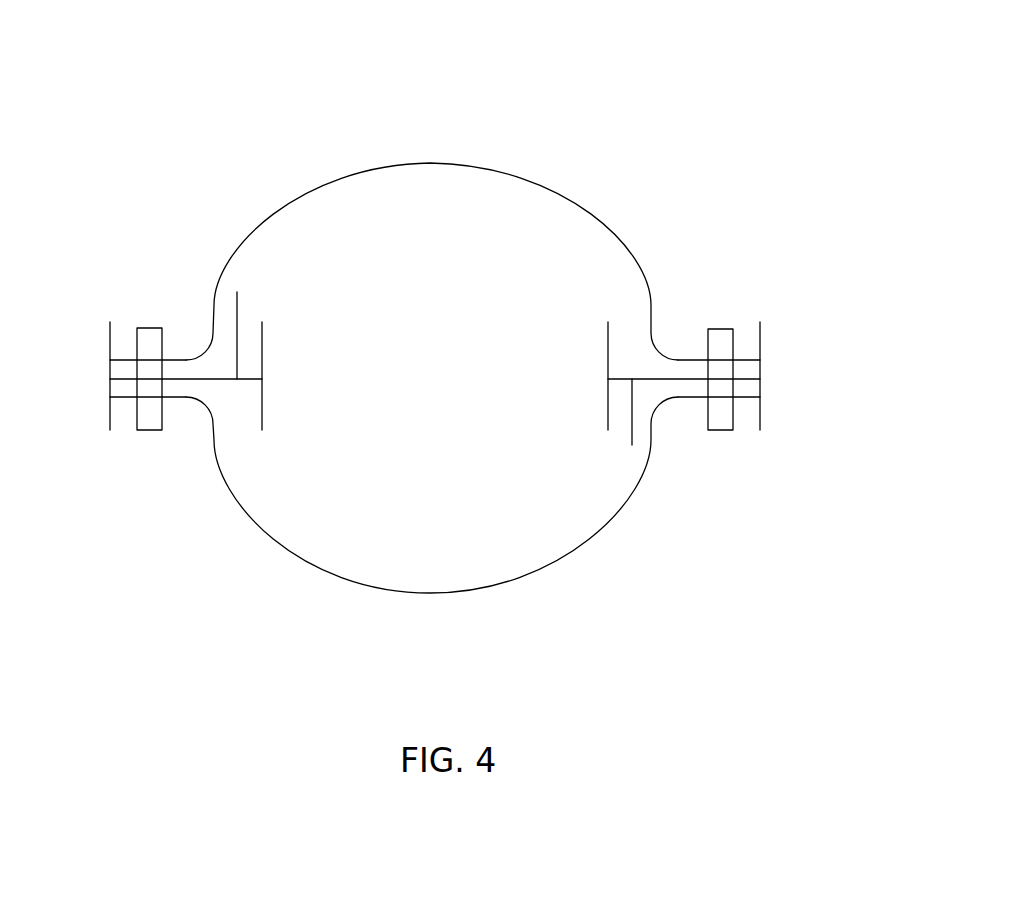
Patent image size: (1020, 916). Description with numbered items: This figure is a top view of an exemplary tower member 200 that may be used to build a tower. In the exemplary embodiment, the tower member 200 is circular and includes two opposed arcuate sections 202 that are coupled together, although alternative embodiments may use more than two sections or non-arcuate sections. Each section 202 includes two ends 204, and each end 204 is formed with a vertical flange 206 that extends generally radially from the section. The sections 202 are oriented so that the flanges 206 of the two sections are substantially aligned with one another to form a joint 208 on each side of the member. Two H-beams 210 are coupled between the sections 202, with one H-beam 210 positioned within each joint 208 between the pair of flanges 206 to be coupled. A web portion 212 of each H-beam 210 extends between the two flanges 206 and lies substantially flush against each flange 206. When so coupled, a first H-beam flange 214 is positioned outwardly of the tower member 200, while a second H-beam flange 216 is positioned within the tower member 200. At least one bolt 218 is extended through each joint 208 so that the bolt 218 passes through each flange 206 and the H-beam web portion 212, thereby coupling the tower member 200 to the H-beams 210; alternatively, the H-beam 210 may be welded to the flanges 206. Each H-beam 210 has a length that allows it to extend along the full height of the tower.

The tower member 200 is at (598, 63).
The arcuate section 202 is at (543, 185).
The end 204 is at (188, 312).
The vertical flange 206 is at (173, 357).
The joint 208 is at (117, 443).
The H-beam 210 is at (272, 412).
The web portion 212 is at (237, 292).
The first H-beam flange 214 is at (110, 413).
The second H-beam flange 216 is at (262, 348).
The bolt 218 is at (147, 430).